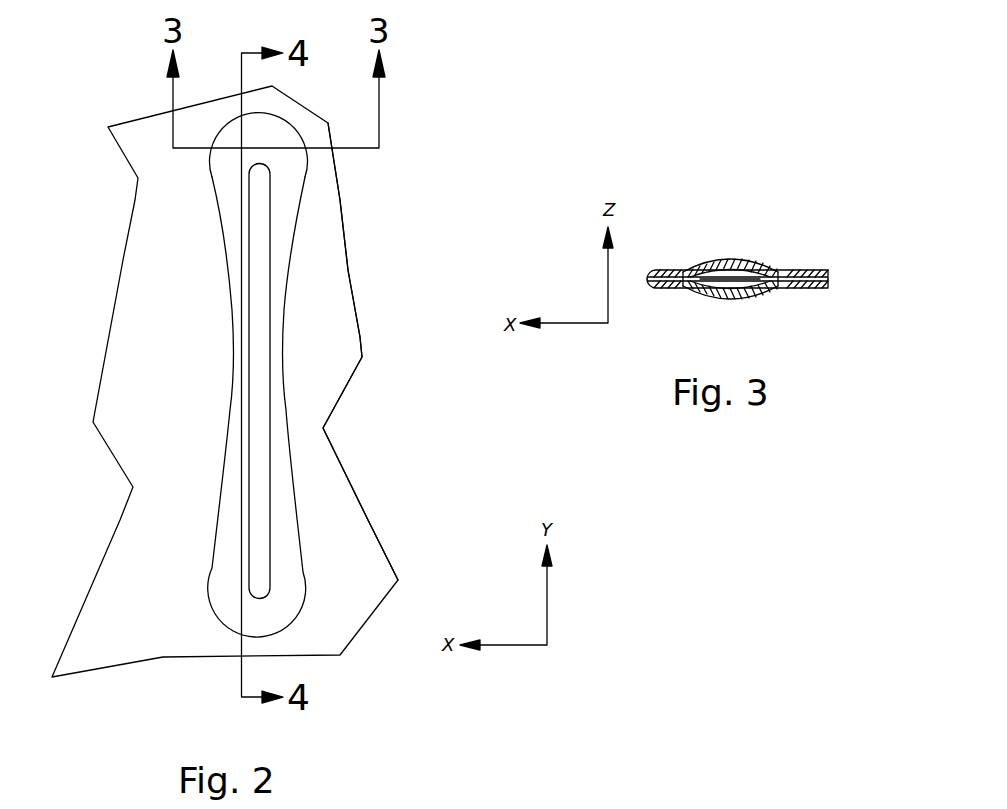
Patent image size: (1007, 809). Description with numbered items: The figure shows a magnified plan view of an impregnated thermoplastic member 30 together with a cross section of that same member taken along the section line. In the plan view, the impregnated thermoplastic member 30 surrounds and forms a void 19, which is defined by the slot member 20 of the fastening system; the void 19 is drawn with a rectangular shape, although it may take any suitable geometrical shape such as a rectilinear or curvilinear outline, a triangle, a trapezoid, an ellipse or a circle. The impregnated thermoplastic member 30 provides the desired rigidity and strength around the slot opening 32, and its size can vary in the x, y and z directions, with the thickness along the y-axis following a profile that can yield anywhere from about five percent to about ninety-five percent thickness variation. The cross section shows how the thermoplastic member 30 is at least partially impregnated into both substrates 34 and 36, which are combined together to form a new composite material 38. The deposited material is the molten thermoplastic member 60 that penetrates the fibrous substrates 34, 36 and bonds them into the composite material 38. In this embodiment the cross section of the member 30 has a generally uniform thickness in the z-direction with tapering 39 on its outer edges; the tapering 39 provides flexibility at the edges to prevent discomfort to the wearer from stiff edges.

In FIG. 2, the void 19 is at (270, 468).
In FIG. 2, the slot member 20 is at (273, 285).
In FIG. 2, the impregnated thermoplastic member 30 is at (288, 153).
In FIG. 2, the slot opening 32 is at (273, 330).
In FIG. 2, the composite material 38 is at (275, 393).
In FIG. 3, the composite material 38 is at (772, 281).
In FIG. 3, the substrate 34 is at (788, 268).
In FIG. 3, the substrate 36 is at (822, 288).
In FIG. 3, the tapering 39 is at (760, 268).
In FIG. 3, the molten thermoplastic member 60 is at (720, 295).